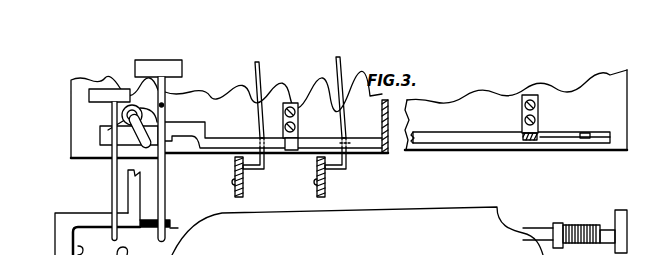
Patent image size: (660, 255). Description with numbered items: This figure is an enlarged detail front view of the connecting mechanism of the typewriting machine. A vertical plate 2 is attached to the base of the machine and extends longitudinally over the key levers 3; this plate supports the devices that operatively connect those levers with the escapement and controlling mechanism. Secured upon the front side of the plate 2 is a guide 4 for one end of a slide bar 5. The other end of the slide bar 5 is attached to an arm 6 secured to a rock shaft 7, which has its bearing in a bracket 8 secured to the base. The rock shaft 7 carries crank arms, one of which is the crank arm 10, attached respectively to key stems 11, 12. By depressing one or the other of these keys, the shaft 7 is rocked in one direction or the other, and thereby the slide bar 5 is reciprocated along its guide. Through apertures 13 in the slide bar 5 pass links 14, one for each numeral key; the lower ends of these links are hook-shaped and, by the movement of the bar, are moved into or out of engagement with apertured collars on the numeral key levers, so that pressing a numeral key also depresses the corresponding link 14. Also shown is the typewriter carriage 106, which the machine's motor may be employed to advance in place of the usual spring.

The vertical plate 2 is at (516, 110).
The key levers 3 is at (243, 185).
The guide 4 is at (298, 118).
The slide bar 5 is at (251, 138).
The arm 6 is at (138, 141).
The rock shaft 7 is at (110, 113).
The bracket 8 is at (128, 195).
The crank arm 10 is at (165, 105).
The key stem 11 is at (100, 140).
The key stem 12 is at (165, 175).
The apertures 13 is at (345, 140).
The links 14 is at (336, 76).
The typewriter carriage 106 is at (341, 231).